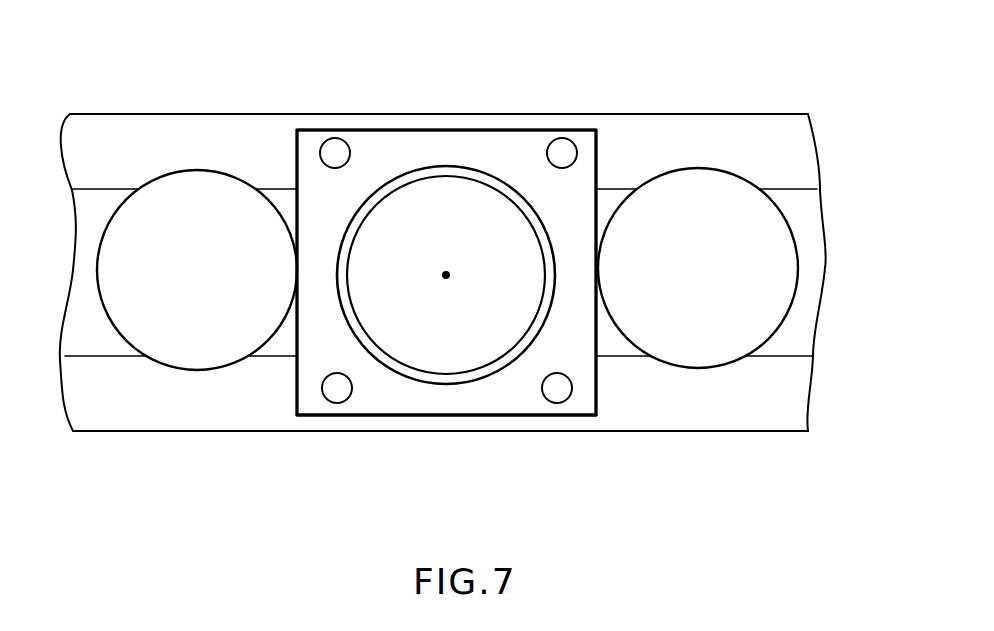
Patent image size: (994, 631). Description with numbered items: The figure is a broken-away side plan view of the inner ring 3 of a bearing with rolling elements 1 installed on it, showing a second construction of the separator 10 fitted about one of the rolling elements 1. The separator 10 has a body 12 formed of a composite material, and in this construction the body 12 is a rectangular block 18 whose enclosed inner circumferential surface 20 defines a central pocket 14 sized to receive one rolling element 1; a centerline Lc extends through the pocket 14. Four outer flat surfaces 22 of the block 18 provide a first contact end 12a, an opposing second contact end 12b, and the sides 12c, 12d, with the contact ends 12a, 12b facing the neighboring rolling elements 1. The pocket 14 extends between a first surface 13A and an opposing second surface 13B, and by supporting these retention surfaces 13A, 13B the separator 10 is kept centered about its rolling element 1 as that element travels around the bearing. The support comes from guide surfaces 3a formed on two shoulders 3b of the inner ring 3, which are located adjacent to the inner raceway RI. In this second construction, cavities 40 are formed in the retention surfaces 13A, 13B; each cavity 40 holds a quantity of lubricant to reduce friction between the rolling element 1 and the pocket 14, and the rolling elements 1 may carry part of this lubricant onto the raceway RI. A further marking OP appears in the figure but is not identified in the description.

The rolling element 1 is at (185, 368).
The inner ring 3 is at (790, 436).
The guide surface 3a is at (772, 170).
The shoulder 3b is at (757, 125).
The separator 10 is at (339, 80).
The separator body 12 is at (398, 110).
The first contact end 12a is at (297, 162).
The second contact end 12b is at (597, 170).
The side 12c is at (475, 417).
The side 12d is at (497, 130).
The first surface 13A is at (530, 135).
The second surface 13B is at (508, 407).
The central pocket 14 is at (390, 337).
The rectangular block 18 is at (576, 421).
The inner circumferential surface 20 is at (500, 357).
The outer flat surface 22 is at (435, 130).
The cavity 40 is at (335, 152).
The opening OP is at (321, 421).
The centerline Lc is at (448, 271).
The bearing inner raceway RI is at (797, 212).